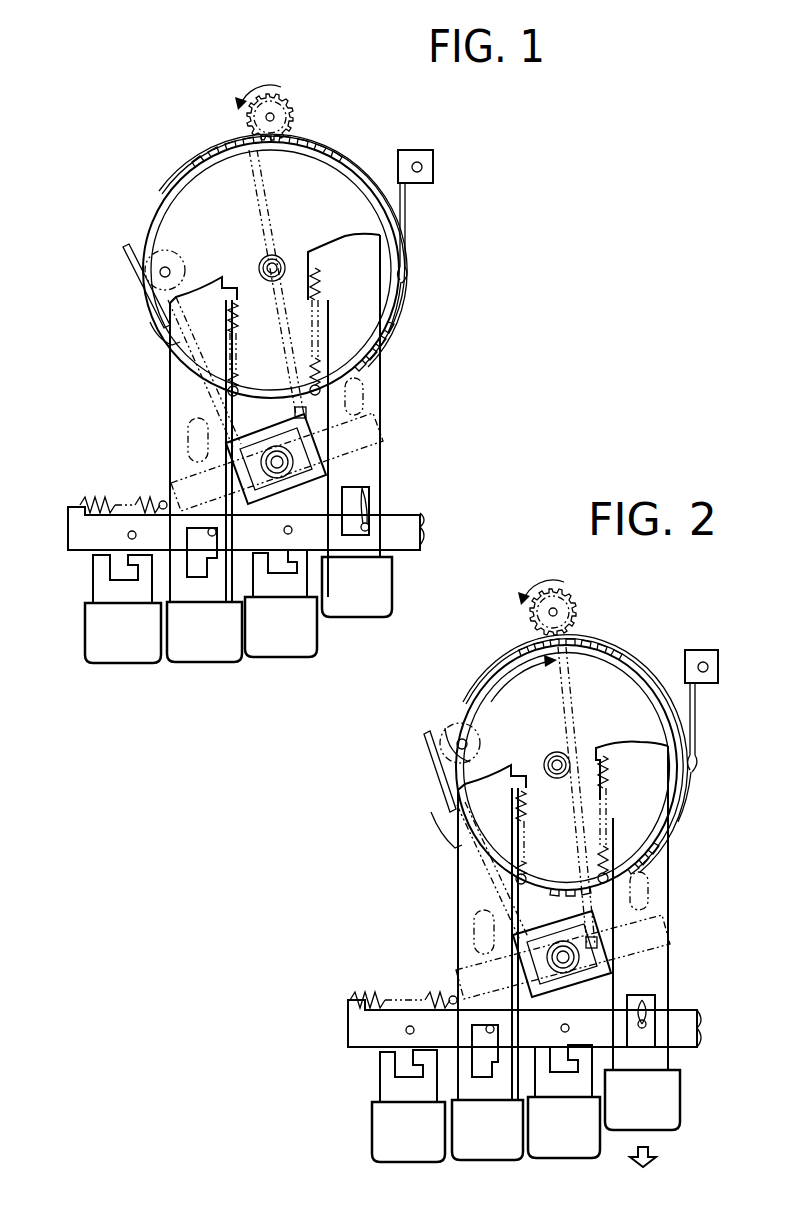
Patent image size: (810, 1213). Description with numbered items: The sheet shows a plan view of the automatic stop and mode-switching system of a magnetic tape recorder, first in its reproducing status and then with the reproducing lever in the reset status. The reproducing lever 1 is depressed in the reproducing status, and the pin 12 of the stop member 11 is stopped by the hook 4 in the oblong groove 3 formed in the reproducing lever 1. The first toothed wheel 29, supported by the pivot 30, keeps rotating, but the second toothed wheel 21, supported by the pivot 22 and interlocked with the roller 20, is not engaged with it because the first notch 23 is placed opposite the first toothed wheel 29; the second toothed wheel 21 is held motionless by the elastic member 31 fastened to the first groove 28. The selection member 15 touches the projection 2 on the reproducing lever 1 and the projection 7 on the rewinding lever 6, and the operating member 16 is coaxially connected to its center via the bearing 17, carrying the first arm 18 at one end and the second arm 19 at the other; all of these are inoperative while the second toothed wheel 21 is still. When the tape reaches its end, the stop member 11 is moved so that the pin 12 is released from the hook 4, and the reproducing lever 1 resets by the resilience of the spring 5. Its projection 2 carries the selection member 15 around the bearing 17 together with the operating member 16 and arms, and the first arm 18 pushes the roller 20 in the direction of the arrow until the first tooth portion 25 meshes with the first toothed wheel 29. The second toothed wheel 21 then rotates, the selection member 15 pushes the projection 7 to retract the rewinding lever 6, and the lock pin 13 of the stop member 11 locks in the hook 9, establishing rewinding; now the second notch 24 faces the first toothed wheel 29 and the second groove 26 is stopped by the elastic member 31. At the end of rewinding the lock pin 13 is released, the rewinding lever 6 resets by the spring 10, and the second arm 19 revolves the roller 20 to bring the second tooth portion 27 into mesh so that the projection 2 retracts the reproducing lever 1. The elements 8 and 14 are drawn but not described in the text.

In FIG. 1, the reproducing lever 1 is at (365, 472).
In FIG. 2, the reproducing lever 1 is at (660, 968).
In FIG. 1, the projection 2 is at (363, 397).
In FIG. 2, the projection 2 is at (648, 895).
In FIG. 1, the oblong groove 3 is at (369, 500).
In FIG. 2, the oblong groove 3 is at (655, 997).
In FIG. 1, the hook 4 is at (370, 527).
In FIG. 2, the hook 4 is at (648, 1027).
In FIG. 1, the spring 5 is at (322, 295).
In FIG. 2, the spring 5 is at (605, 830).
In FIG. 1, the rewinding lever 6 is at (212, 590).
In FIG. 2, the rewinding lever 6 is at (497, 1088).
In FIG. 1, the projection 7 is at (188, 440).
In FIG. 2, the projection 7 is at (474, 930).
In FIG. 1, the slider piece 8 is at (187, 555).
In FIG. 2, the slider piece 8 is at (470, 1050).
In FIG. 1, the hook 9 is at (210, 538).
In FIG. 2, the hook 9 is at (490, 1034).
In FIG. 1, the spring 10 is at (226, 322).
In FIG. 2, the spring 10 is at (516, 812).
In FIG. 1, the stop member 11 is at (68, 537).
In FIG. 2, the stop member 11 is at (348, 1035).
In FIG. 1, the pin 12 is at (392, 540).
In FIG. 2, the pin 12 is at (641, 1000).
In FIG. 1, the lock pin 13 is at (218, 532).
In FIG. 2, the lock pin 13 is at (498, 1029).
In FIG. 1, the spring 14 is at (88, 497).
In FIG. 2, the spring 14 is at (362, 993).
In FIG. 1, the selection member 15 is at (300, 412).
In FIG. 2, the selection member 15 is at (603, 937).
In FIG. 1, the operating member 16 is at (268, 440).
In FIG. 2, the operating member 16 is at (552, 928).
In FIG. 1, the bearing 17 is at (280, 470).
In FIG. 2, the bearing 17 is at (567, 970).
In FIG. 1, the first arm 18 is at (123, 252).
In FIG. 2, the first arm 18 is at (425, 740).
In FIG. 1, the second arm 19 is at (262, 181).
In FIG. 2, the second arm 19 is at (575, 672).
In FIG. 1, the roller 20 is at (180, 258).
In FIG. 2, the roller 20 is at (448, 728).
In FIG. 1, the second toothed wheel 21 is at (212, 183).
In FIG. 2, the second toothed wheel 21 is at (566, 767).
In FIG. 1, the pivot 22 is at (275, 255).
In FIG. 2, the pivot 22 is at (555, 752).
In FIG. 1, the first notch 23 is at (292, 127).
In FIG. 2, the first notch 23 is at (585, 635).
In FIG. 1, the second notch 24 is at (352, 371).
In FIG. 2, the second notch 24 is at (640, 866).
In FIG. 1, the first tooth portion 25 is at (165, 190).
In FIG. 2, the first tooth portion 25 is at (522, 640).
In FIG. 1, the second groove 26 is at (152, 338).
In FIG. 2, the second groove 26 is at (440, 806).
In FIG. 1, the second tooth portion 27 is at (352, 160).
In FIG. 2, the second tooth portion 27 is at (575, 753).
In FIG. 1, the first groove 28 is at (385, 272).
In FIG. 2, the first groove 28 is at (668, 795).
In FIG. 1, the first toothed wheel 29 is at (280, 85).
In FIG. 2, the first toothed wheel 29 is at (572, 592).
In FIG. 1, the pivot 30 is at (266, 117).
In FIG. 2, the pivot 30 is at (553, 608).
In FIG. 1, the elastic member 31 is at (433, 167).
In FIG. 2, the elastic member 31 is at (718, 667).